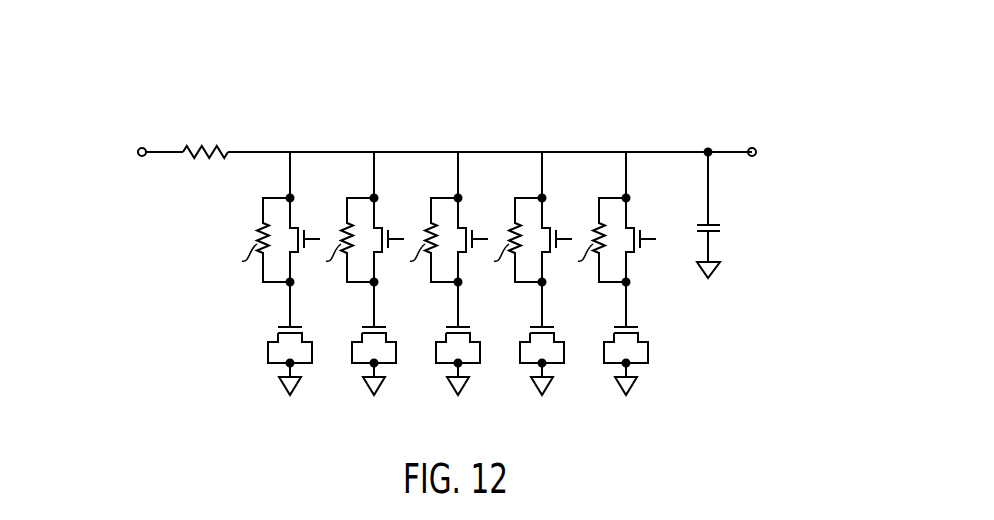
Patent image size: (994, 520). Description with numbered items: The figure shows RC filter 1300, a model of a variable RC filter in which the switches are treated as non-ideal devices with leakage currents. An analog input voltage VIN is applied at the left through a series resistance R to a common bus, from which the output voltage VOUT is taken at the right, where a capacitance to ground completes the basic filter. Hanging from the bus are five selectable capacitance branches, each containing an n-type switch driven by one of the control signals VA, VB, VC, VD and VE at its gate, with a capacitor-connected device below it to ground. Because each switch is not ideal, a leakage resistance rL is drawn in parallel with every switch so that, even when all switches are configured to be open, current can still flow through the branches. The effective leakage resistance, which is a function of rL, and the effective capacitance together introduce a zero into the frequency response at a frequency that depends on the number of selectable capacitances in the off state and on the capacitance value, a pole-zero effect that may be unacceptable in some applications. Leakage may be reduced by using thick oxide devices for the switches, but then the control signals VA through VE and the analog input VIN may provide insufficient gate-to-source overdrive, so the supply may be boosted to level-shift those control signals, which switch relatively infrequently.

The RC filter 1300 is at (160, 70).
The resistance R is at (205, 126).
The analog input voltage VIN is at (130, 152).
The output voltage VOUT is at (793, 153).
The control signal VA is at (301, 273).
The control signal VB is at (385, 273).
The control signal VC is at (469, 273).
The control signal VD is at (554, 273).
The control signal VE is at (637, 273).
The leakage resistance rL is at (425, 240).